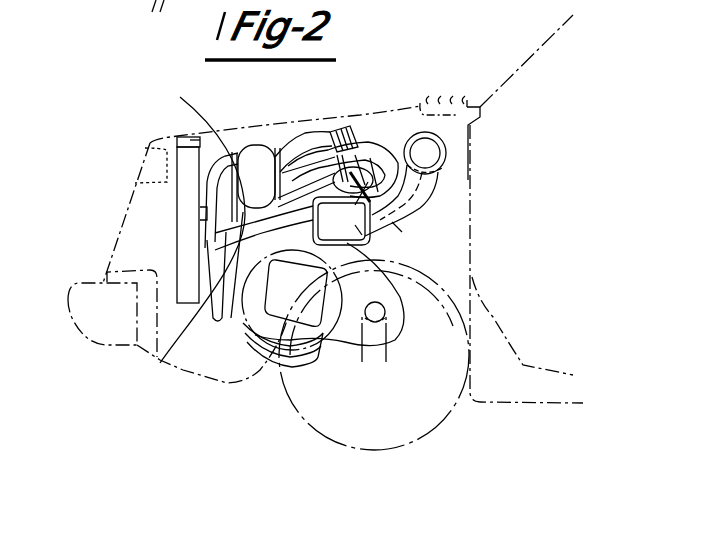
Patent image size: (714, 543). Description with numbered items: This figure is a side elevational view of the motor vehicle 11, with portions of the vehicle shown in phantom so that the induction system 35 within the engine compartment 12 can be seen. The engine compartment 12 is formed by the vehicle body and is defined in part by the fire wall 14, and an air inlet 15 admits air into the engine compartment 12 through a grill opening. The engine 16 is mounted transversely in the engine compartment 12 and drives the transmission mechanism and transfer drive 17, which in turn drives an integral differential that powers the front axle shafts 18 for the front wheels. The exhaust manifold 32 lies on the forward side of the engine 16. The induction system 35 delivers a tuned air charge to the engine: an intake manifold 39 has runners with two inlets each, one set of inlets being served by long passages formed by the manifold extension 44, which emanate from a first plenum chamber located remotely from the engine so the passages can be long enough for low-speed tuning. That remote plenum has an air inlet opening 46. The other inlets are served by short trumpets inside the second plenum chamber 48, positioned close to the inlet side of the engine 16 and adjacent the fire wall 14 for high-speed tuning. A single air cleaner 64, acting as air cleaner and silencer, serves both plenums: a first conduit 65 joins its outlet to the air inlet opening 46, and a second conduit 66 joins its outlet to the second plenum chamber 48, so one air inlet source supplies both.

The motor vehicle 11 is at (118, 142).
The engine compartment 12 is at (237, 127).
The fire wall 14 is at (473, 237).
The air inlet 15 is at (138, 220).
The engine 16 is at (366, 125).
The transmission mechanism and transfer drive 17 is at (410, 335).
The front axle shafts 18 is at (384, 357).
The exhaust manifold 32 is at (198, 230).
The induction system 35 is at (438, 210).
The intake manifold 39 is at (438, 190).
The manifold extension 44 is at (380, 150).
The air inlet opening 46 is at (198, 219).
The second plenum chamber 48 is at (446, 153).
The air cleaner 64 is at (385, 236).
The first conduit 65 is at (160, 366).
The second conduit 66 is at (440, 183).